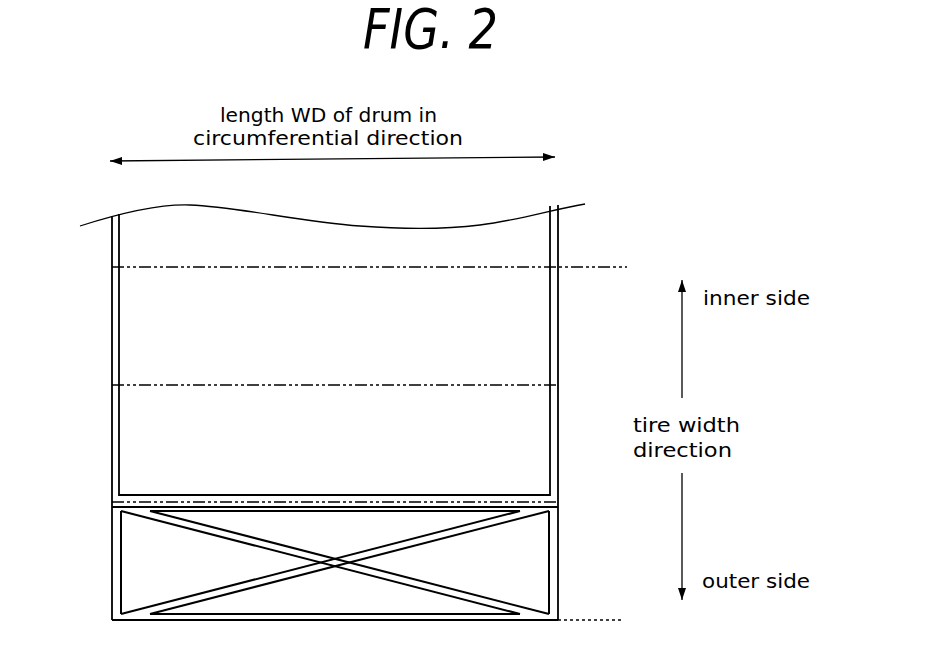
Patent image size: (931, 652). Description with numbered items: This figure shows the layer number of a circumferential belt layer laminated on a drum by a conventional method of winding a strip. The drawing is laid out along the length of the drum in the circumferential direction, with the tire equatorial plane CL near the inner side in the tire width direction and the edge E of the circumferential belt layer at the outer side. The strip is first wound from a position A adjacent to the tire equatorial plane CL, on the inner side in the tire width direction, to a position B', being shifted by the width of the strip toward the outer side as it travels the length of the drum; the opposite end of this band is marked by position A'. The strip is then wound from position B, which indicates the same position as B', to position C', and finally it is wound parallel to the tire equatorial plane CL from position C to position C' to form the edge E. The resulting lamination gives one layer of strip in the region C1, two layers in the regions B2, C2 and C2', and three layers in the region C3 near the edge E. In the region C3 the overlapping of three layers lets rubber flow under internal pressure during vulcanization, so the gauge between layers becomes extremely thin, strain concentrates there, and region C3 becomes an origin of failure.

The region B2 is at (350, 348).
The region C1 is at (354, 602).
The region C2 is at (511, 562).
The region C2' is at (320, 562).
The region C3 is at (354, 542).
The tire equatorial plane CL is at (386, 266).
The edge E is at (600, 619).
The position A is at (589, 325).
The position A' is at (77, 330).
The position B is at (589, 440).
The position B' is at (77, 438).
The position C is at (588, 557).
The position C' is at (77, 557).